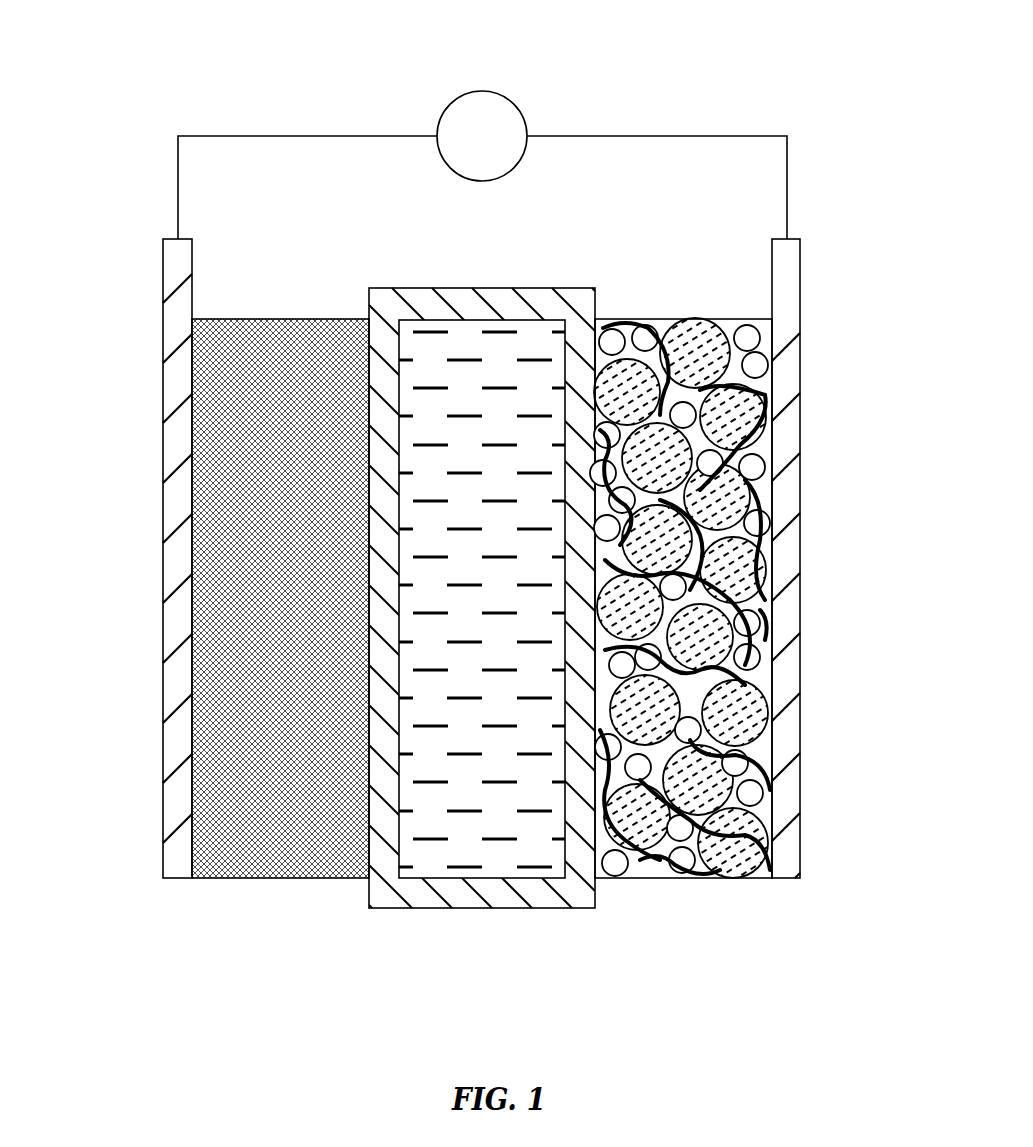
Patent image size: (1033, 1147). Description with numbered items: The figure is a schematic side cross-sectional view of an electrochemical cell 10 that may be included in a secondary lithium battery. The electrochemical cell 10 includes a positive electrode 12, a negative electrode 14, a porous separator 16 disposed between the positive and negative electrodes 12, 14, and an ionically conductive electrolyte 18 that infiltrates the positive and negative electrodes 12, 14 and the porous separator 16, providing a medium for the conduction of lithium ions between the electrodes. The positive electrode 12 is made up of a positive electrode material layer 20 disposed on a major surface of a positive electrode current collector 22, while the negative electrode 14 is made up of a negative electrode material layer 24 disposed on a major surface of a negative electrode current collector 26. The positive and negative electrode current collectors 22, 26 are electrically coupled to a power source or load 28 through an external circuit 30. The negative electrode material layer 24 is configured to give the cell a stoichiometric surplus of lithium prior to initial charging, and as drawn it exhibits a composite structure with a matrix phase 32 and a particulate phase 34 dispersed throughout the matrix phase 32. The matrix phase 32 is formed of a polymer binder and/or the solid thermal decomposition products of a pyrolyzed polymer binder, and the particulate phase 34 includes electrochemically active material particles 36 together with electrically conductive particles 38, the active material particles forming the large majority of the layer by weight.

The electrochemical cell 10 is at (205, 108).
The positive electrode 12 is at (160, 440).
The negative electrode 14 is at (812, 486).
The porous separator 16 is at (487, 909).
The ionically conductive electrolyte 18 is at (432, 320).
The positive electrode material layer 20 is at (280, 879).
The positive electrode current collector 22 is at (163, 672).
The negative electrode material layer 24 is at (707, 880).
The negative electrode current collector 26 is at (800, 345).
The power source or load 28 is at (482, 136).
The external circuit 30 is at (788, 152).
The matrix phase 32 is at (640, 862).
The particulate phase 34 is at (694, 320).
The electrochemically active material particles 36 is at (772, 722).
The electrically conductive particles 38 is at (772, 644).